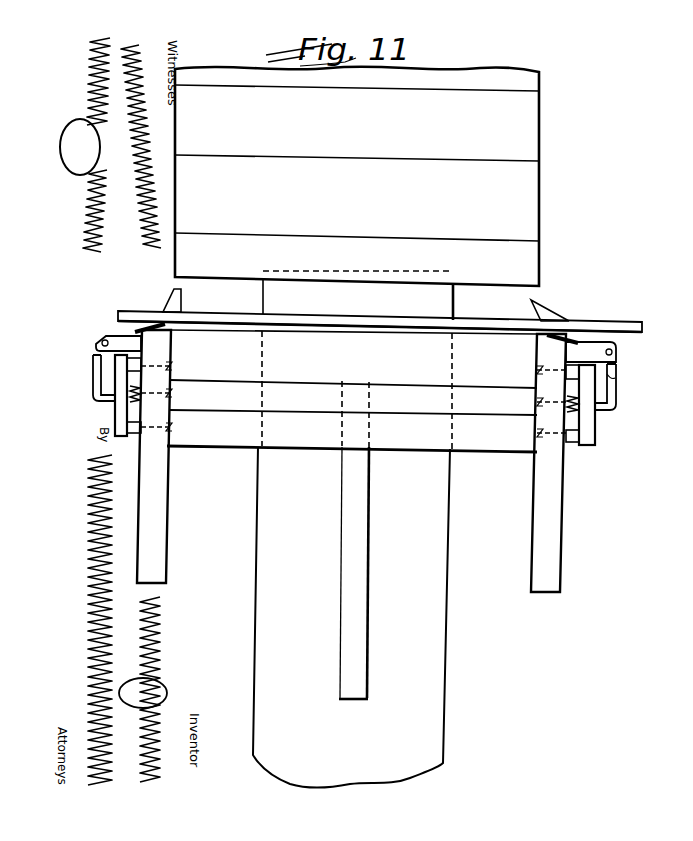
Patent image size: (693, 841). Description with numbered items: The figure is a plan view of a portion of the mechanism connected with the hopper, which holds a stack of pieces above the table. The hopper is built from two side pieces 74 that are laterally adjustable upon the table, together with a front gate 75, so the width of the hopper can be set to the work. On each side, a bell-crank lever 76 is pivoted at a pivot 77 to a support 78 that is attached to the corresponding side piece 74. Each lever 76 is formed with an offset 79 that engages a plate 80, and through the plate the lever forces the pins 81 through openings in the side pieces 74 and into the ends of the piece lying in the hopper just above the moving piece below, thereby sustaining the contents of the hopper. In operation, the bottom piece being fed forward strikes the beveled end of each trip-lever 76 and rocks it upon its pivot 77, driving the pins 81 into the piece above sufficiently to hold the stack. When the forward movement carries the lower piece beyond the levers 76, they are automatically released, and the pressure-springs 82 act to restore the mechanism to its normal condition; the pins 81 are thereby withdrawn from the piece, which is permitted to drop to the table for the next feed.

The side pieces 74 is at (160, 518).
The front gate 75 is at (482, 321).
The bell-crank levers 76 is at (169, 298).
The pivots 77 is at (102, 343).
The supports 78 is at (97, 351).
The offset 79 is at (103, 367).
The plates 80 is at (120, 407).
The pins 81 is at (173, 362).
The pressure-springs 82 is at (130, 397).